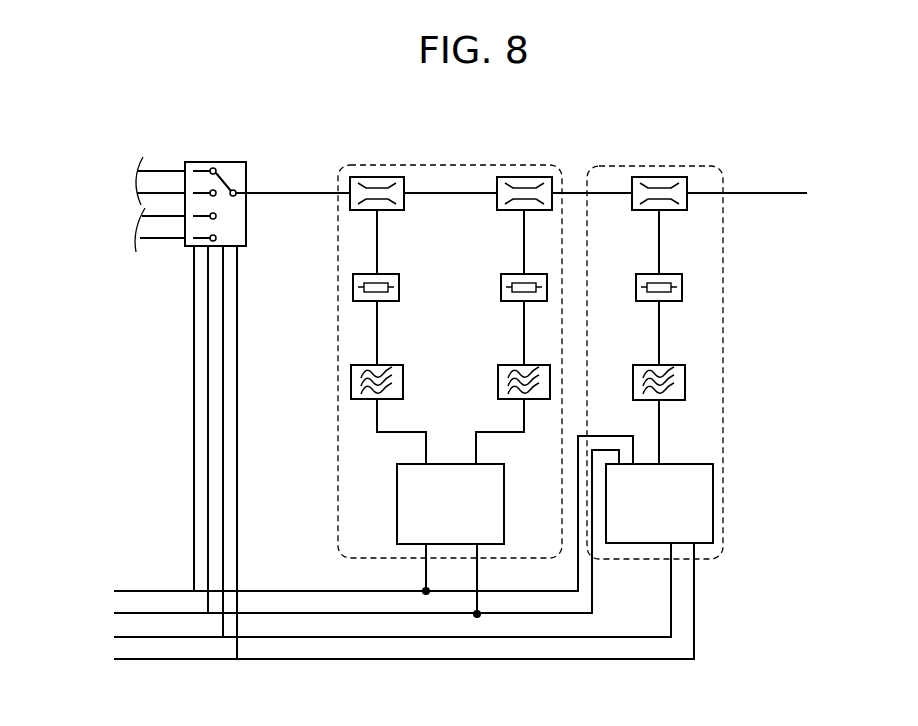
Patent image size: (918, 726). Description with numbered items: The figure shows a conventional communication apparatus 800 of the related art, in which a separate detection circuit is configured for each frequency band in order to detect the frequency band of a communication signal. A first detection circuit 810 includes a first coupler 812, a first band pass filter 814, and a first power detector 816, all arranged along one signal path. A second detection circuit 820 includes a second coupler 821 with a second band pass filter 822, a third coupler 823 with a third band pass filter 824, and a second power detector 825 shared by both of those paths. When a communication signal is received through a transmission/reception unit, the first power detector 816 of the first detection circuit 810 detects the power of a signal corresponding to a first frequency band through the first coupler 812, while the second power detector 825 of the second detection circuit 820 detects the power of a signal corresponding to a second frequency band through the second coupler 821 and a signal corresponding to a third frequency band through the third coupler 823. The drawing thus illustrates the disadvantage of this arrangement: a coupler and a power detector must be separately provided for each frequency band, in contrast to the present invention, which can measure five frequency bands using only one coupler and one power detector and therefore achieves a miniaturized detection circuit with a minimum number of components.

The conventional communication apparatus 800 is at (705, 82).
The first detection circuit 810 is at (618, 166).
The first coupler 812 is at (659, 177).
The first band pass filter 814 is at (685, 378).
The first power detector 816 is at (713, 500).
The second detection circuit 820 is at (448, 165).
The second coupler 821 is at (522, 177).
The second band pass filter 822 is at (512, 365).
The third coupler 823 is at (377, 177).
The third band pass filter 824 is at (390, 365).
The second power detector 825 is at (504, 500).